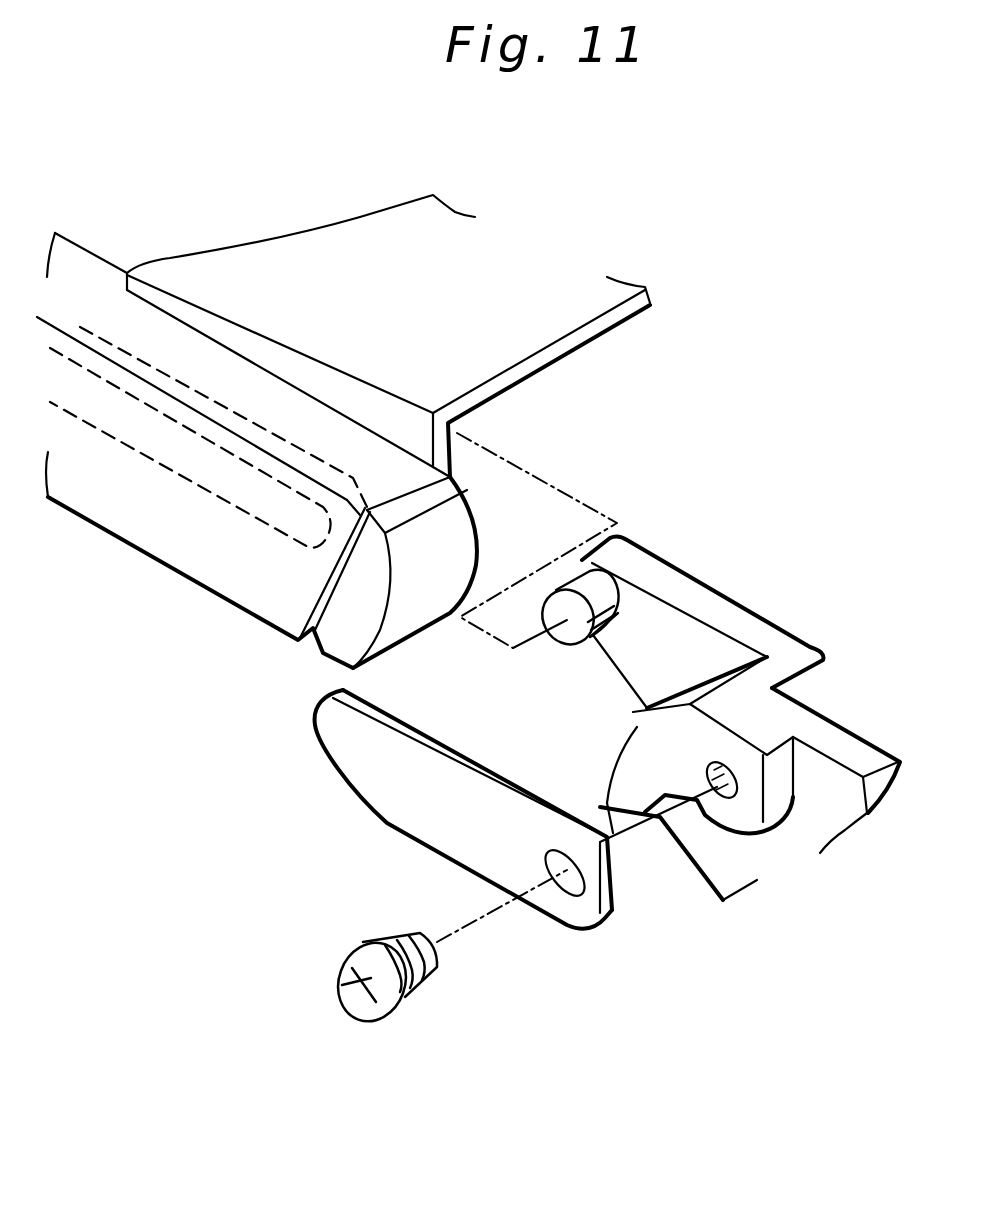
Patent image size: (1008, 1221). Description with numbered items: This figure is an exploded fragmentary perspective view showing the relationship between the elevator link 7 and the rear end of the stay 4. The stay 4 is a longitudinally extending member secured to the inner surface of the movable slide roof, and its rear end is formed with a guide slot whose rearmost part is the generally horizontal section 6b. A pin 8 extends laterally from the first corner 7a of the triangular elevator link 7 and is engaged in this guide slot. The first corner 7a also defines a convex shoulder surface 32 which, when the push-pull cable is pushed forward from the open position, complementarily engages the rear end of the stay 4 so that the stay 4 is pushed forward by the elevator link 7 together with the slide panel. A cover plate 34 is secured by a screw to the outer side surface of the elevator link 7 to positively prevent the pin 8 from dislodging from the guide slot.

The stay 4 is at (105, 278).
The horizontal section 6b is at (323, 460).
The pin 8 is at (583, 593).
The first corner 7a is at (648, 550).
The elevator link 7 is at (833, 730).
The convex shoulder surface 32 is at (632, 733).
The cover plate 34 is at (400, 823).